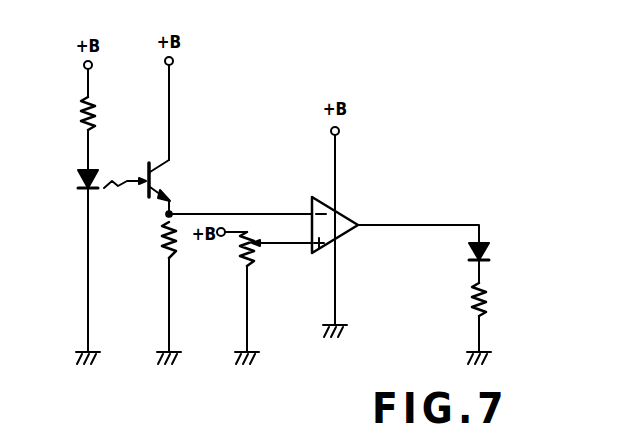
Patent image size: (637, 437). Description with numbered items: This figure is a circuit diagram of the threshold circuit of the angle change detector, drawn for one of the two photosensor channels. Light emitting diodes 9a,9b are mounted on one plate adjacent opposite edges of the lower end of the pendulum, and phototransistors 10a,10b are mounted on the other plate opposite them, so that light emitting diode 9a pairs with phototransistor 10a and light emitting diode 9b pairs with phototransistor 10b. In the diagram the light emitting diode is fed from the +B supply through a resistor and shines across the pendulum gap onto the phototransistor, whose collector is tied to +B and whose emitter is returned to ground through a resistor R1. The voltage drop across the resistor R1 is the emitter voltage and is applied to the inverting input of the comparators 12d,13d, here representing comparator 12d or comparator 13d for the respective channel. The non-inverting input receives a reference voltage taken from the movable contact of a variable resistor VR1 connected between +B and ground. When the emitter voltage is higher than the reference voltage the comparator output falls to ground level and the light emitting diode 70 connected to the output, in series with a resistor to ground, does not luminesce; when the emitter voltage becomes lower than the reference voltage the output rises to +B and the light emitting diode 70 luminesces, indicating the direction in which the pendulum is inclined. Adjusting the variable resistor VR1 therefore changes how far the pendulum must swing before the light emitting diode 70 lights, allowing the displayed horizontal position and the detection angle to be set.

The light emitting diodes 9a,9b is at (55, 172).
The light emitting diode 9a is at (55, 172).
The light emitting diode 9b is at (78, 174).
The phototransistors 10a,10b is at (206, 185).
The phototransistor 10a is at (206, 185).
The phototransistor 10b is at (158, 183).
The resistor R1 is at (162, 255).
The variable resistor VR1 is at (246, 264).
The comparators 12d,13d is at (377, 217).
The comparator 12d is at (377, 217).
The comparator 13d is at (345, 216).
The light emitting diode 70 is at (490, 255).